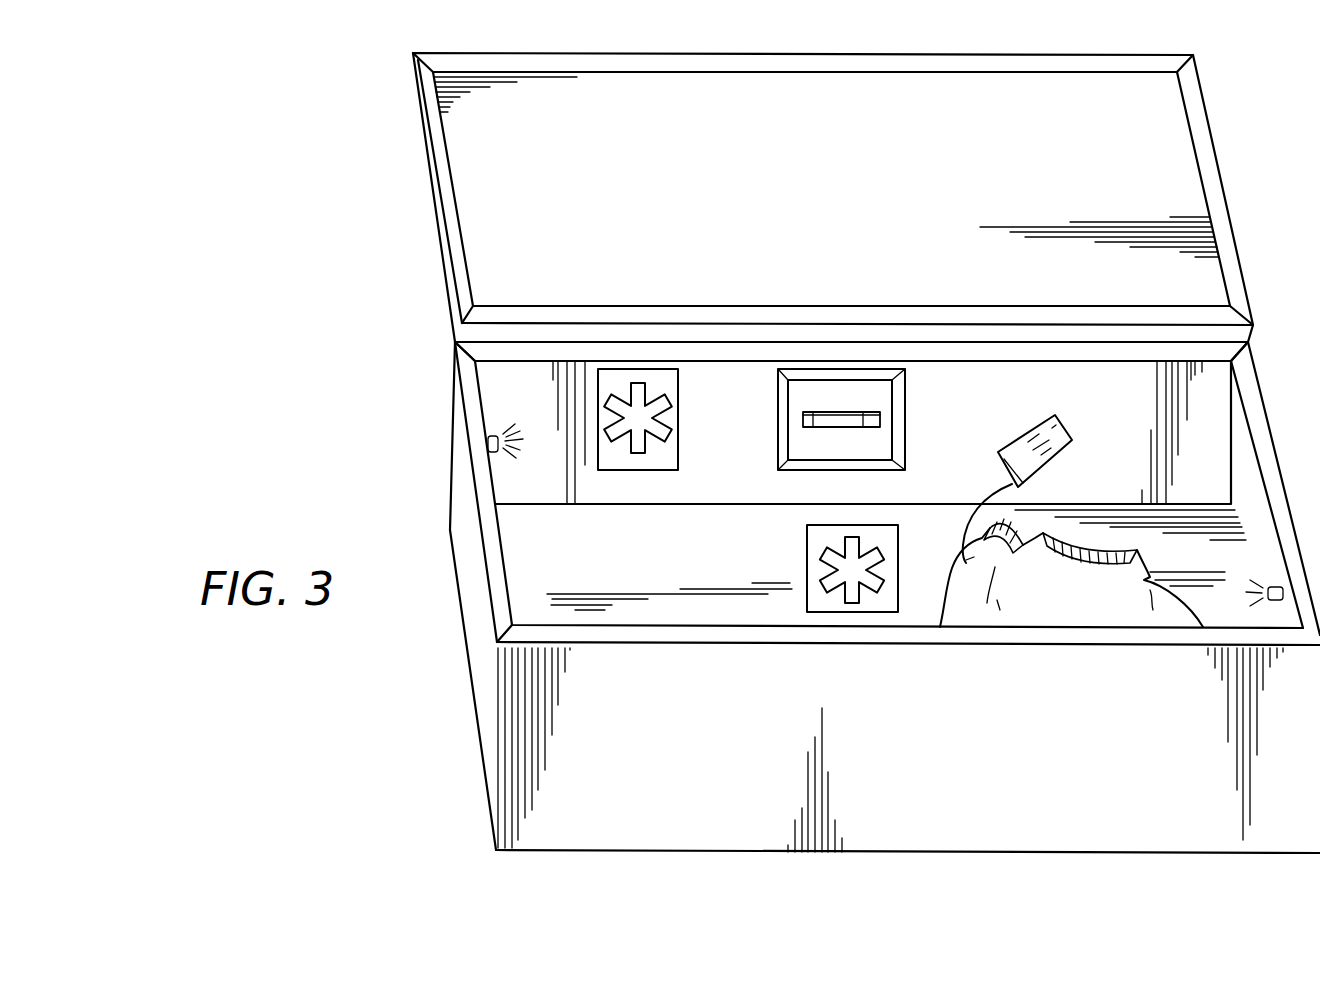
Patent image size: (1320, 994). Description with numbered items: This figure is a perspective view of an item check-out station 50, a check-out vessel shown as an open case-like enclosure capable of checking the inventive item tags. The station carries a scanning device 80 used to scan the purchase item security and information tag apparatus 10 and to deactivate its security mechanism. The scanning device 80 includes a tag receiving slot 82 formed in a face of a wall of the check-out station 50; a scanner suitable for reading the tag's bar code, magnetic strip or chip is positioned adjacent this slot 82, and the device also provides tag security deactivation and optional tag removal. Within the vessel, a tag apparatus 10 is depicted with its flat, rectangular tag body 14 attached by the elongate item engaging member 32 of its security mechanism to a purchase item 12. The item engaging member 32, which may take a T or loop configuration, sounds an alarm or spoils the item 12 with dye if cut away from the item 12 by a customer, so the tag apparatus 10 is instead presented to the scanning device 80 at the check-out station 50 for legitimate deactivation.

The item check-out station 50 is at (286, 262).
The scanning device 80 is at (658, 443).
The tag receiving slot 82 is at (852, 421).
The purchase item security and information tag apparatus 10 is at (1062, 423).
The tag body 14 is at (1025, 438).
The item engaging member 32 is at (982, 498).
The purchase item 12 is at (1072, 604).